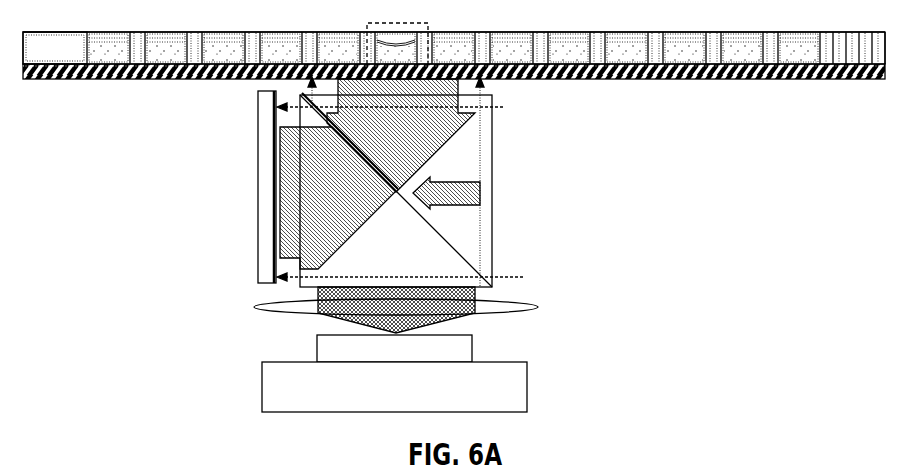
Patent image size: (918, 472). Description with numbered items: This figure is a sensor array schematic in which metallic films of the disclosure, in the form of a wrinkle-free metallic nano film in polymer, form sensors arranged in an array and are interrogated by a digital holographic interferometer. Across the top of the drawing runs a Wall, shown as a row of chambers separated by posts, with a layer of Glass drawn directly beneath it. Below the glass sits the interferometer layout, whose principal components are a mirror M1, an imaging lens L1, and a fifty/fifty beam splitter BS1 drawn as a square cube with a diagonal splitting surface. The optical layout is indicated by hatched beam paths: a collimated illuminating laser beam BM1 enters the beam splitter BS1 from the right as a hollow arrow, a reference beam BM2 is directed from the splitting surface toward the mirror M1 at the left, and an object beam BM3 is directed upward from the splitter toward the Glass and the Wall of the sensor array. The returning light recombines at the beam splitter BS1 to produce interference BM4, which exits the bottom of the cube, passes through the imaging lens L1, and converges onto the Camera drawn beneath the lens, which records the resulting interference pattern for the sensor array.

The wall Wall is at (243, 79).
The glass Glass is at (122, 75).
The mirror M1 is at (250, 187).
The 50/50 beam splitter BS1 is at (413, 182).
The collimated illuminating laser beam BM1 is at (477, 192).
The reference beam BM2 is at (338, 198).
The object beam BM3 is at (401, 135).
The interference BM4 is at (396, 310).
The imaging lens L1 is at (400, 322).
The camera Camera is at (394, 373).